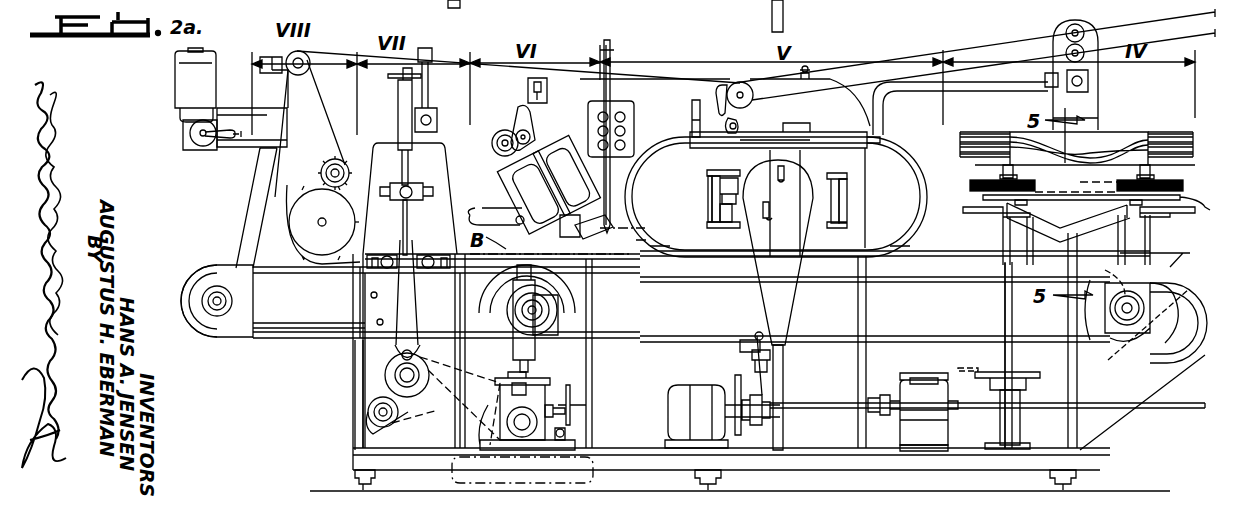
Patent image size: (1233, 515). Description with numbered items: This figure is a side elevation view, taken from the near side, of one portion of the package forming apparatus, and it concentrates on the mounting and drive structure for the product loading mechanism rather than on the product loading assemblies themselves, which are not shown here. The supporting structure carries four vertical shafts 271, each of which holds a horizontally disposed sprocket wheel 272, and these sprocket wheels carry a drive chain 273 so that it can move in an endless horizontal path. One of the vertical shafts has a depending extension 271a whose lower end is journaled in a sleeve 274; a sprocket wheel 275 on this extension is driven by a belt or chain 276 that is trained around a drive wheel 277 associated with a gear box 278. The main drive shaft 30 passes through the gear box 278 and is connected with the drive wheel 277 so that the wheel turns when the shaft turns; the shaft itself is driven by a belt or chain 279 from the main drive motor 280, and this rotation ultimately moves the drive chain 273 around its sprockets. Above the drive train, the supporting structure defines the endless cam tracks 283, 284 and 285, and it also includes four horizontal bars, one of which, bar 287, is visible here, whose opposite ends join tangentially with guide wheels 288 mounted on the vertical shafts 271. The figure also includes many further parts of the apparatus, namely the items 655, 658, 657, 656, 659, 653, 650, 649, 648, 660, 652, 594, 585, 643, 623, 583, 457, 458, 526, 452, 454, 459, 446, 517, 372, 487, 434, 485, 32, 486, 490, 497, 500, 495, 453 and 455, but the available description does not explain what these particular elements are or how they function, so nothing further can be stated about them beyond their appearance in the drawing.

The supply bottle 655 is at (179, 91).
The bottle mount 658 is at (185, 114).
The pump wheel 657 is at (182, 134).
The feed tube 656 is at (240, 137).
The support post 659 is at (275, 108).
The belt pulley 653 is at (310, 48).
The sprocket 650 is at (328, 165).
The wheel guard 649 is at (300, 249).
The drive wheel 648 is at (289, 224).
The chute 660 is at (258, 194).
The conveyor end roller 652 is at (240, 352).
The conveyor frame member 594 is at (359, 283).
The frame upright 585 is at (355, 375).
The pump cylinder 643 is at (400, 104).
The crosshead 623 is at (430, 177).
The switch box 583 is at (473, 2).
The rocker arm 457 is at (477, 297).
The rocker pivot 458 is at (487, 342).
The gear 526 is at (452, 408).
The pulley 452 is at (554, 301).
The slide bar 454 is at (557, 314).
The pump housing 459 is at (531, 403).
The flywheel 446 is at (650, 348).
The base plate 517 is at (474, 448).
The oval track 372 is at (675, 135).
The bracket 487 is at (730, 168).
The carrier block 434 is at (732, 188).
The guide plate 485 is at (710, 205).
The funnel 32 is at (735, 193).
The guide bar 486 is at (839, 186).
The bottom plate 490 is at (842, 219).
The belt roller 497 is at (738, 91).
The hood 500 is at (835, 61).
The belt 495 is at (1011, 33).
The endless cam track 283 is at (993, 132).
The endless cam track 284 is at (965, 146).
The vertical shaft 271 is at (1002, 174).
The sprocket wheel 272 is at (975, 188).
The drive chain 273 is at (1085, 175).
The endless cam track 285 is at (977, 218).
The horizontally extending bar 287 is at (1135, 220).
The guide wheel 288 is at (1198, 203).
The depending extension 271a is at (1005, 296).
The conveyor roller 453 is at (1105, 298).
The roller housing 455 is at (1135, 318).
The belt or chain 279 is at (735, 385).
The main drive motor 280 is at (643, 384).
The main drive shaft 30 is at (837, 406).
The drive wheel 277 is at (918, 372).
The gear box 278 is at (933, 447).
The belt or chain 276 is at (935, 367).
The sprocket wheel 275 is at (1023, 367).
The sleeve 274 is at (1014, 426).